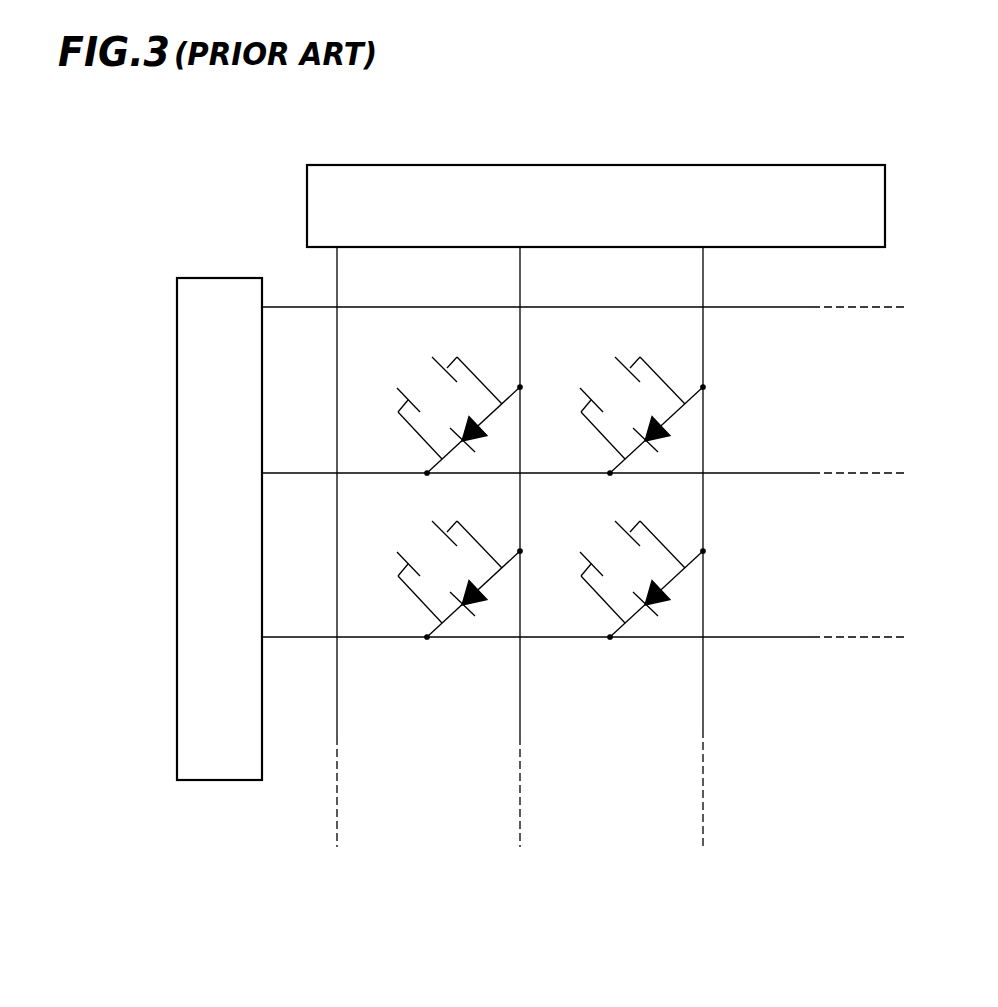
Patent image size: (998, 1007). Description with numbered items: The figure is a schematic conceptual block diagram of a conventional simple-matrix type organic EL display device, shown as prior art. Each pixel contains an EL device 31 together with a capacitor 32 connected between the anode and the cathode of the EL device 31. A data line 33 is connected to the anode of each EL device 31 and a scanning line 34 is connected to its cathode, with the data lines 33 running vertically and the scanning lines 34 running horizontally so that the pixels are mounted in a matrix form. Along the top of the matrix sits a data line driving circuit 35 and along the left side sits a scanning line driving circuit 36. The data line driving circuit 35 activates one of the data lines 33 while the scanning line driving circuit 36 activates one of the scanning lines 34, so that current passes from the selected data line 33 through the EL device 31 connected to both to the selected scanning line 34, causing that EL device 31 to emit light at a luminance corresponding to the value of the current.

The EL device 31 is at (742, 418).
The capacitor 32 is at (425, 384).
The data line 33 is at (521, 282).
The scanning line 34 is at (293, 305).
The data line driving circuit 35 is at (859, 163).
The scanning line driving circuit 36 is at (237, 276).